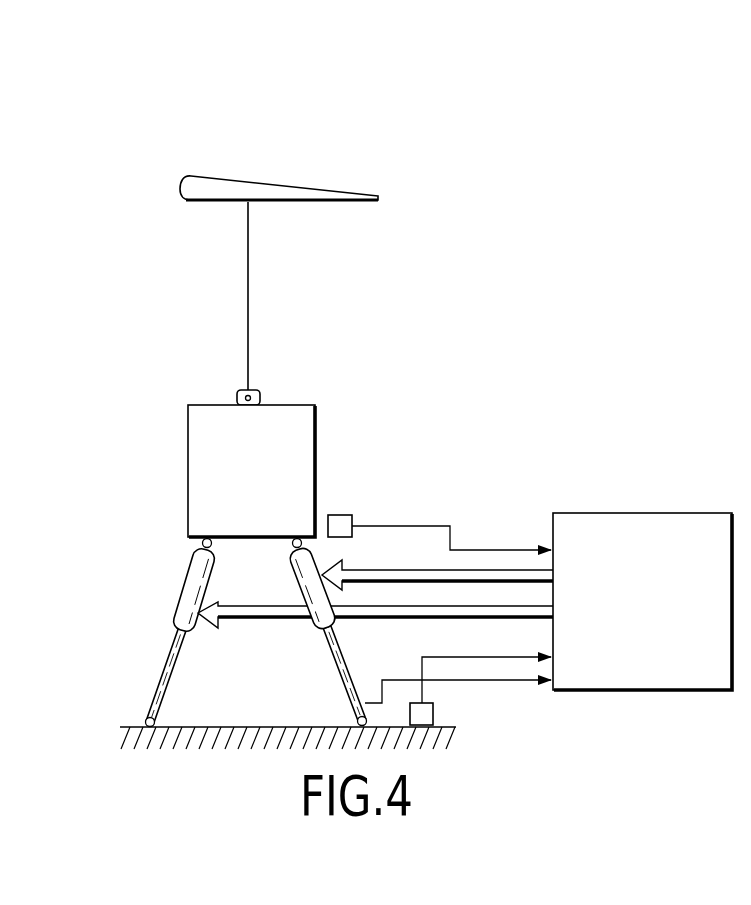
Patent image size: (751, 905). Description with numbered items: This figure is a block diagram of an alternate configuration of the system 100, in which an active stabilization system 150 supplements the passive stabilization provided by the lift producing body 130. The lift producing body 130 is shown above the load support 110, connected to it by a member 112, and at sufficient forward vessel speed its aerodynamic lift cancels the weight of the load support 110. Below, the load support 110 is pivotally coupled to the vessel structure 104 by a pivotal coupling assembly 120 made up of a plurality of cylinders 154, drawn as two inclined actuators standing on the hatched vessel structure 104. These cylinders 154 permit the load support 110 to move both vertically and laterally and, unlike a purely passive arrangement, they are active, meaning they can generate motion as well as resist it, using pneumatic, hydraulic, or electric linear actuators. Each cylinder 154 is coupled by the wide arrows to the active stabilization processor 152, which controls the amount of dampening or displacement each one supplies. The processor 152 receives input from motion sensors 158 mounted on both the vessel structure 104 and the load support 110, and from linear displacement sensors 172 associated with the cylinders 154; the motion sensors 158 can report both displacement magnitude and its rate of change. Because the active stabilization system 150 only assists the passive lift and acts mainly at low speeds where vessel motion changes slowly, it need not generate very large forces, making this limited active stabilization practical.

The system 100 is at (122, 124).
The vessel structure 104 is at (132, 724).
The load support 110 is at (317, 433).
The support rod 112 is at (249, 311).
The pivotal coupling assembly 120 is at (115, 512).
The lift producing body 130 is at (291, 182).
The active stabilization system 150 is at (503, 502).
The active stabilization processor 152 is at (670, 512).
The cylinders 154 is at (183, 588).
The motion sensors 158 is at (354, 516).
The linear displacement sensors 172 is at (170, 651).